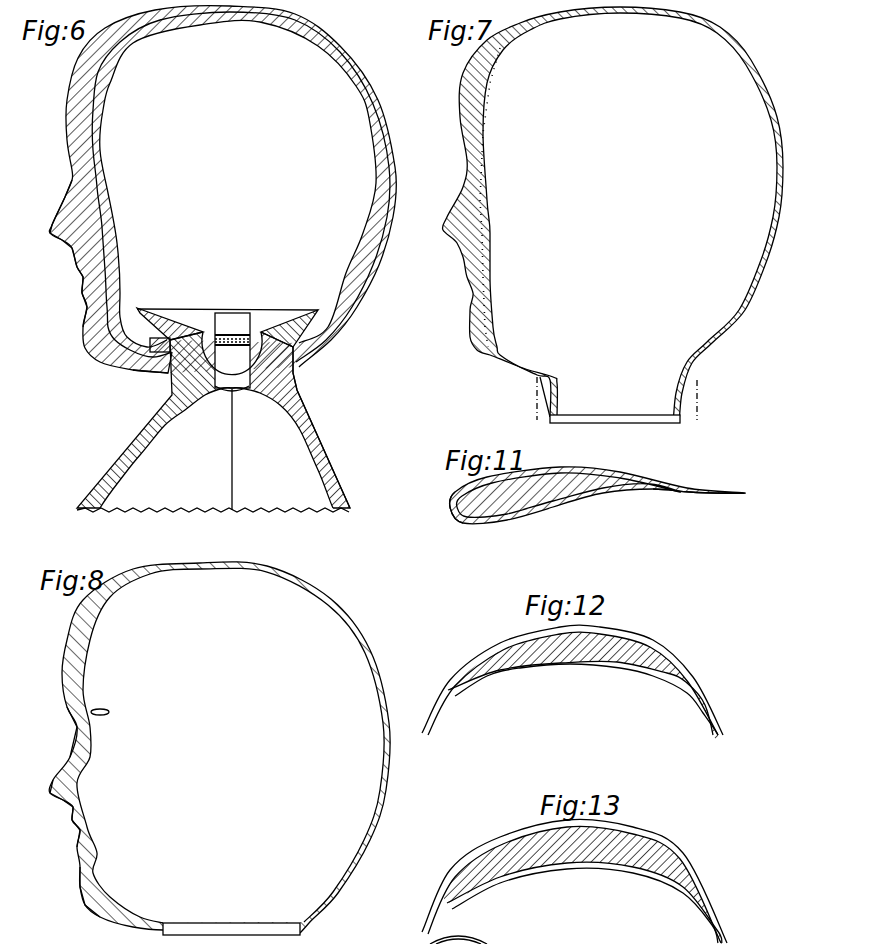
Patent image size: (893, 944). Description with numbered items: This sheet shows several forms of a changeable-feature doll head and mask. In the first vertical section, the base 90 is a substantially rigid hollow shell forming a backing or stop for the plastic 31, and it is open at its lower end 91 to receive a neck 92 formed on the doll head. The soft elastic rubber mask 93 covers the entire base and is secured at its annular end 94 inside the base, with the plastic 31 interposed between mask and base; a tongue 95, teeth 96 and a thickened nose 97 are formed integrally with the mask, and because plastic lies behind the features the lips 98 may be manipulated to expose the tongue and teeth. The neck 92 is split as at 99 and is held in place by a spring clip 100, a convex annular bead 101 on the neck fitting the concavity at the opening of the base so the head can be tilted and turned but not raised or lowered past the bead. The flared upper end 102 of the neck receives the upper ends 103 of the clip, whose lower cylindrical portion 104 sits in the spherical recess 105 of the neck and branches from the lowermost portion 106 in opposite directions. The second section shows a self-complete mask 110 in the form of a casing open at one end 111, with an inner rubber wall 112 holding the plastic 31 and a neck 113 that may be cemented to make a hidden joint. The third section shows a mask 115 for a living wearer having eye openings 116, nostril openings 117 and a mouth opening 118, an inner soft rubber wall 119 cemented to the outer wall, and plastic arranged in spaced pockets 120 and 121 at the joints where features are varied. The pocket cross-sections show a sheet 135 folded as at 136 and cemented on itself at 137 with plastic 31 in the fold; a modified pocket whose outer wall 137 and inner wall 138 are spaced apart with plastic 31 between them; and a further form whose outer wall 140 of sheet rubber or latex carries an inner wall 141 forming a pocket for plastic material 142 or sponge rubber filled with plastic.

In FIG. 6, the plastic 31 is at (100, 202).
In FIG. 7, the plastic 31 is at (487, 259).
In FIG. 8, the plastic 31 is at (107, 896).
In FIG. 11, the plastic 31 is at (557, 501).
In FIG. 12, the plastic 31 is at (627, 639).
In FIG. 6, the base 90 is at (110, 223).
In FIG. 6, the lower end 91 is at (157, 373).
In FIG. 6, the neck 92 is at (172, 398).
In FIG. 6, the mask 93 is at (72, 184).
In FIG. 6, the annular end 94 is at (148, 337).
In FIG. 6, the tongue 95 is at (80, 283).
In FIG. 6, the teeth 96 is at (82, 298).
In FIG. 6, the thickened nose 97 is at (50, 234).
In FIG. 6, the lips 98 is at (75, 267).
In FIG. 6, the split 99 is at (240, 401).
In FIG. 6, the spring clip 100 is at (243, 318).
In FIG. 6, the convex annular bead 101 is at (298, 383).
In FIG. 6, the upper end 102 is at (151, 310).
In FIG. 6, the upper ends 103 is at (227, 310).
In FIG. 6, the lower cylindrical portion 104 is at (203, 367).
In FIG. 6, the spherical recess 105 is at (193, 401).
In FIG. 6, the lowermost portion 106 is at (230, 384).
In FIG. 7, the mask 110 is at (610, 13).
In FIG. 7, the open end 111 is at (620, 412).
In FIG. 7, the inner rubber wall 112 is at (490, 221).
In FIG. 7, the neck 113 is at (557, 399).
In FIG. 8, the mask 115 is at (290, 575).
In FIG. 8, the eye openings 116 is at (103, 709).
In FIG. 8, the nostril openings 117 is at (72, 797).
In FIG. 8, the mouth opening 118 is at (92, 828).
In FIG. 8, the inner soft rubber wall 119 is at (90, 748).
In FIG. 8, the pocket 120 is at (82, 889).
In FIG. 8, the pocket 121 is at (92, 815).
In FIG. 11, the sheet 135 is at (567, 472).
In FIG. 11, the fold 136 is at (450, 506).
In FIG. 11, the cemented portion 137 is at (693, 492).
In FIG. 12, the cemented portion 137 is at (490, 655).
In FIG. 12, the inner wall 138 is at (497, 675).
In FIG. 13, the outer wall 140 is at (480, 849).
In FIG. 13, the inner wall 141 is at (547, 864).
In FIG. 13, the plastic material 142 is at (633, 839).